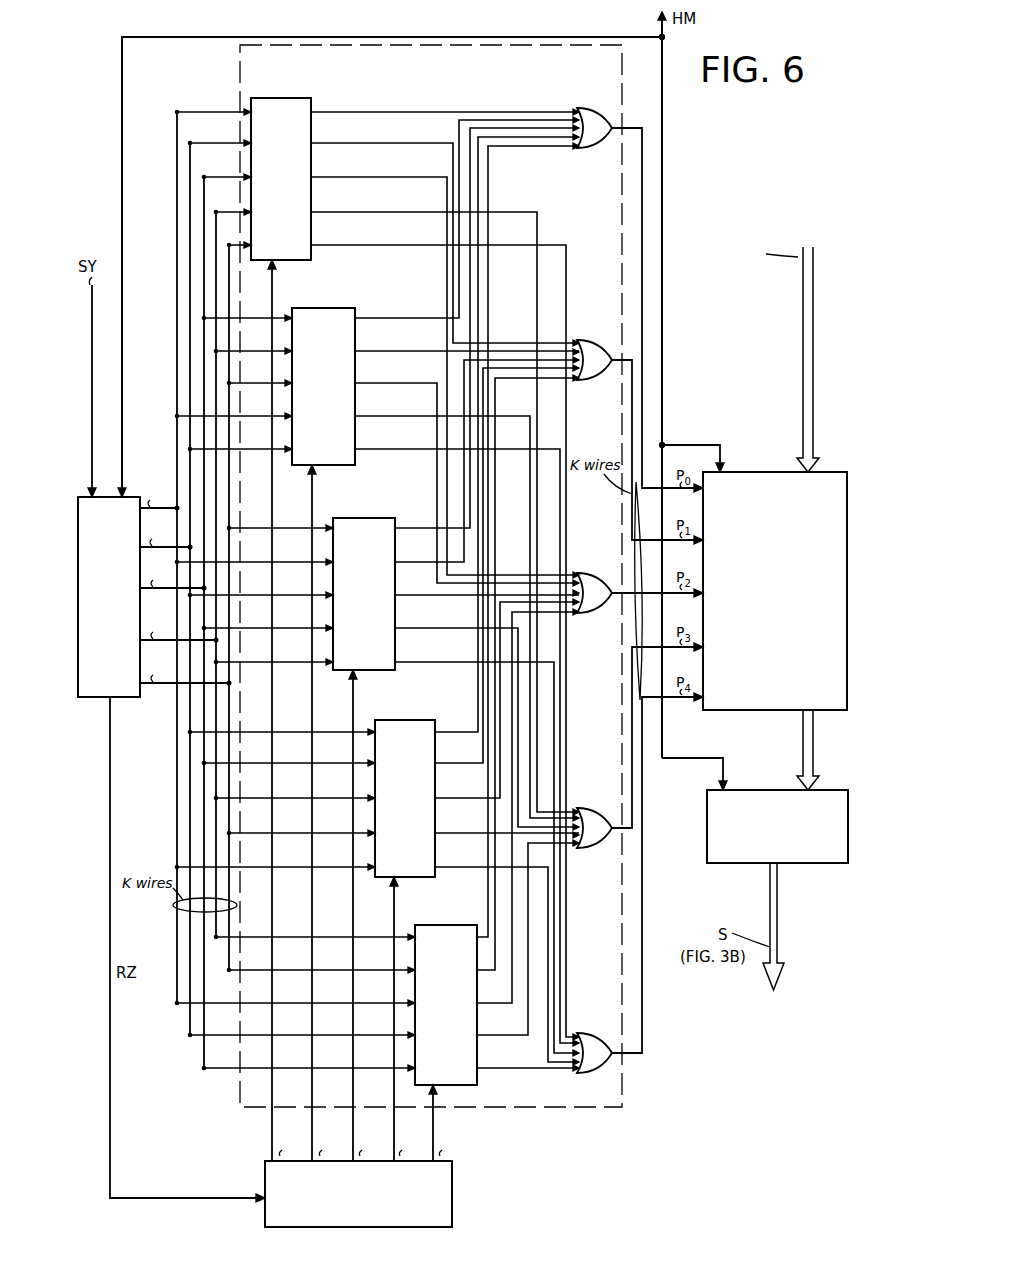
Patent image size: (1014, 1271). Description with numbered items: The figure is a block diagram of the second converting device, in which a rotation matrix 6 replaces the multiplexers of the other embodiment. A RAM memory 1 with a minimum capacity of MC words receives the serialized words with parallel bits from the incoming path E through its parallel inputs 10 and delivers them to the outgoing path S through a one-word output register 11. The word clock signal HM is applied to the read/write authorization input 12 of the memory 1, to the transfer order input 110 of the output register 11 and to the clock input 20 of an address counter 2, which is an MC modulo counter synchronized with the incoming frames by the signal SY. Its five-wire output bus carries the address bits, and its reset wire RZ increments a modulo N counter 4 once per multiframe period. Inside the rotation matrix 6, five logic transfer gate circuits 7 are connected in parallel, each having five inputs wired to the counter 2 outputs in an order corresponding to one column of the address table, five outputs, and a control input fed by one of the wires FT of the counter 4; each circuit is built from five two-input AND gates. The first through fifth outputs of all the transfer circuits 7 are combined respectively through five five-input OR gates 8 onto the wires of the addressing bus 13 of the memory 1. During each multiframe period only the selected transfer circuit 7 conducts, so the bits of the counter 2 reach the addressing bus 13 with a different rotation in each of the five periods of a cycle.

The RAM memory 1 is at (749, 710).
The address counter 2 is at (95, 698).
The modulo N counter 4 is at (452, 1193).
The rotation matrix 6 is at (238, 62).
The logic transfer gate circuits 7 is at (364, 577).
The OR gates 8 is at (589, 572).
The parallel inputs 10 is at (818, 462).
The output register 11 is at (706, 820).
The read/write authorization input 12 is at (724, 470).
The addressing bus 13 is at (644, 707).
The clock input 20 is at (127, 490).
The transfer order input 110 is at (728, 788).